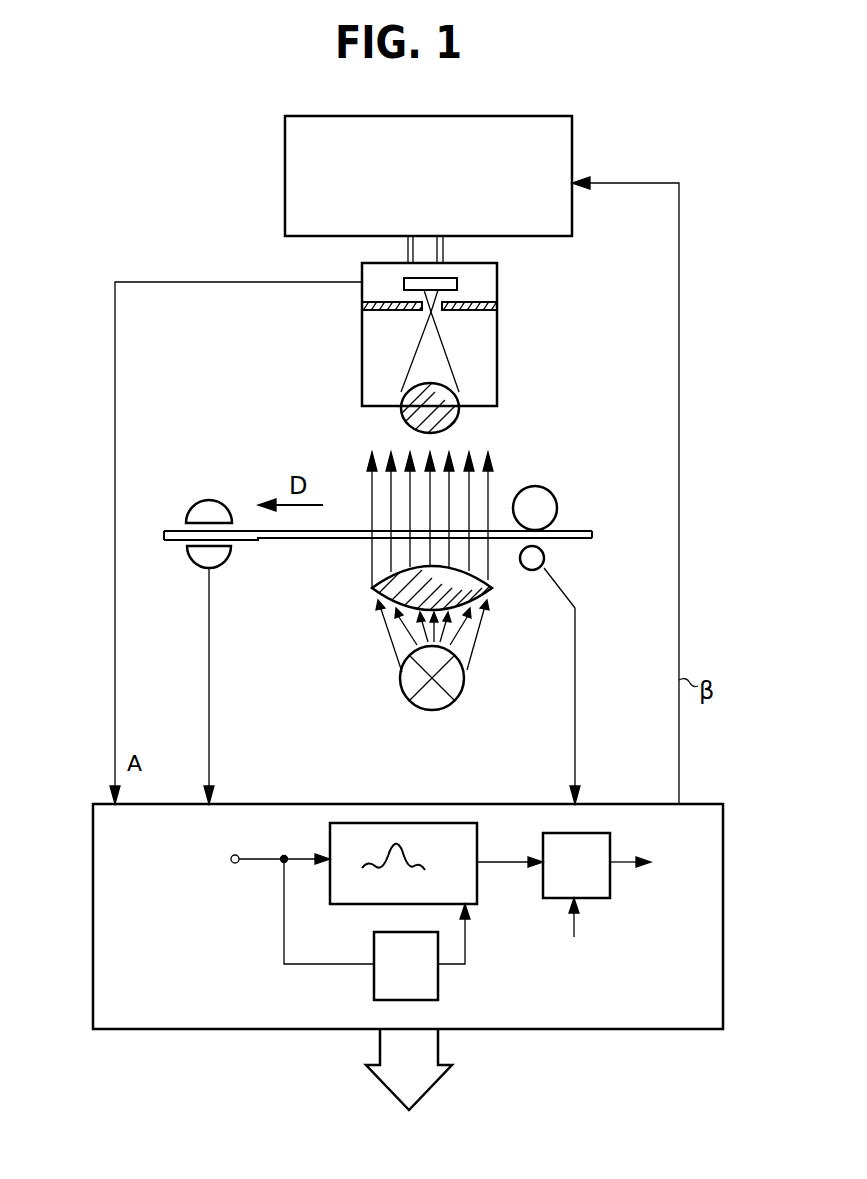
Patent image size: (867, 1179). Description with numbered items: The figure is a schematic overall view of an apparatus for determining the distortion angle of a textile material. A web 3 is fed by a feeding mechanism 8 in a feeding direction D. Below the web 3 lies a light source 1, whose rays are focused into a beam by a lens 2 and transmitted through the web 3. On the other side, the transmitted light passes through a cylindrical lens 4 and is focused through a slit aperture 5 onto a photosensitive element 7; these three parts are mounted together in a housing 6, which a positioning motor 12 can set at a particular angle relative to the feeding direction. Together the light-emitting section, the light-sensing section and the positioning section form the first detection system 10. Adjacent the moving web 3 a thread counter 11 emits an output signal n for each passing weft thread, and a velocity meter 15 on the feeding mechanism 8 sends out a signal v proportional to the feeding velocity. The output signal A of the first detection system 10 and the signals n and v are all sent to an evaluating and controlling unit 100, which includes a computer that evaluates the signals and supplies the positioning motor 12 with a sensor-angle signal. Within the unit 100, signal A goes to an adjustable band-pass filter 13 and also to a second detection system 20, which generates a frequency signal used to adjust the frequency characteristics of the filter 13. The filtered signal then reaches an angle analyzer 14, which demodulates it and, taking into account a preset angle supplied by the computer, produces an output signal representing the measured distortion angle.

The light source 1 is at (458, 686).
The lens 2 is at (492, 590).
The web 3 is at (583, 538).
The cylindrical lens 4 is at (454, 415).
The aperture 5 is at (497, 307).
The housing 6 is at (497, 343).
The photosensitive element 7 is at (457, 280).
The feeding mechanism 8 is at (566, 515).
The first detection system 10 is at (706, 236).
The thread counter 11 is at (235, 561).
The positioning motor 12 is at (440, 193).
The adjustable band-pass filter 13 is at (466, 873).
The angle analyzer 14 is at (600, 845).
The velocity meter 15 is at (544, 560).
The second detection system 20 is at (421, 980).
The evaluating and controlling unit 100 is at (710, 870).